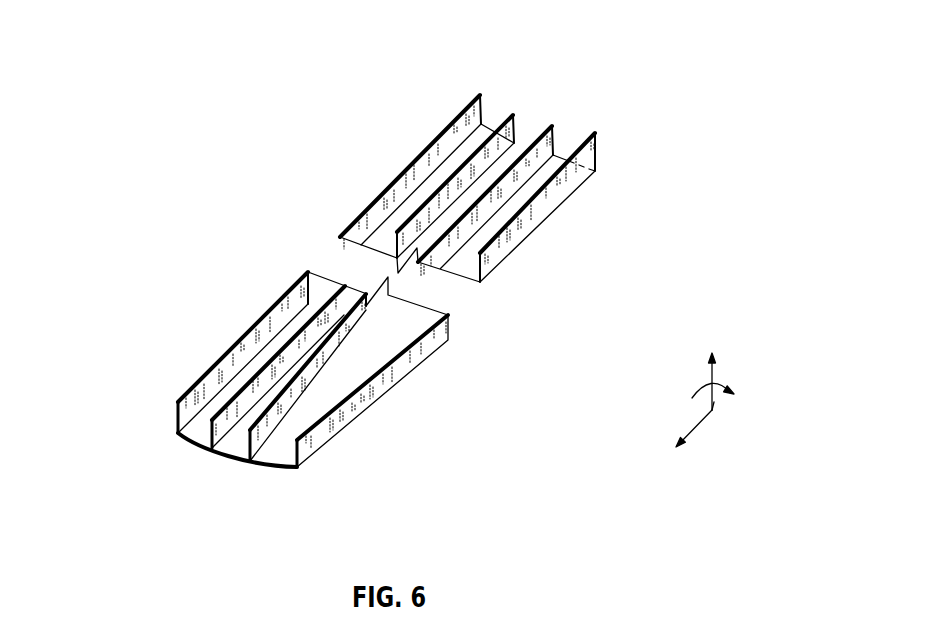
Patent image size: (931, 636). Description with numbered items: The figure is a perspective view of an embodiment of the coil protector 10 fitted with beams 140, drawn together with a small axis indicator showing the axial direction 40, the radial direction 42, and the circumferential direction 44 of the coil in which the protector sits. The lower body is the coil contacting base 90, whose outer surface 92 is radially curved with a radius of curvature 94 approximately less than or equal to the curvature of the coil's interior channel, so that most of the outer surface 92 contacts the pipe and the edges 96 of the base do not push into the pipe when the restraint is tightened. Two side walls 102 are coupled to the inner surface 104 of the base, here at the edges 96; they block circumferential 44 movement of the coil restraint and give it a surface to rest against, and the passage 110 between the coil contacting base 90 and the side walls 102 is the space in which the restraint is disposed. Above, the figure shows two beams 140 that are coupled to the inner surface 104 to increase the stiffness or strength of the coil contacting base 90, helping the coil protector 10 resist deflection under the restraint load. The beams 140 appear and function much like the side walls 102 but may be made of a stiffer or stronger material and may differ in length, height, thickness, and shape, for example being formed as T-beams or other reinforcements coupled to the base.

The coil protector 10 is at (601, 47).
The passage 110 is at (531, 111).
The beams 140 is at (447, 175).
The coil contacting base 90 is at (300, 450).
The side walls 102 is at (183, 400).
The radius of curvature 94 is at (235, 447).
The inner surface 104 is at (362, 362).
The outer surface 92 is at (221, 460).
The edges 96 is at (167, 437).
The axial axis or direction 40 is at (698, 425).
The radial axis or direction 42 is at (715, 397).
The circumferential axis or direction 44 is at (702, 383).